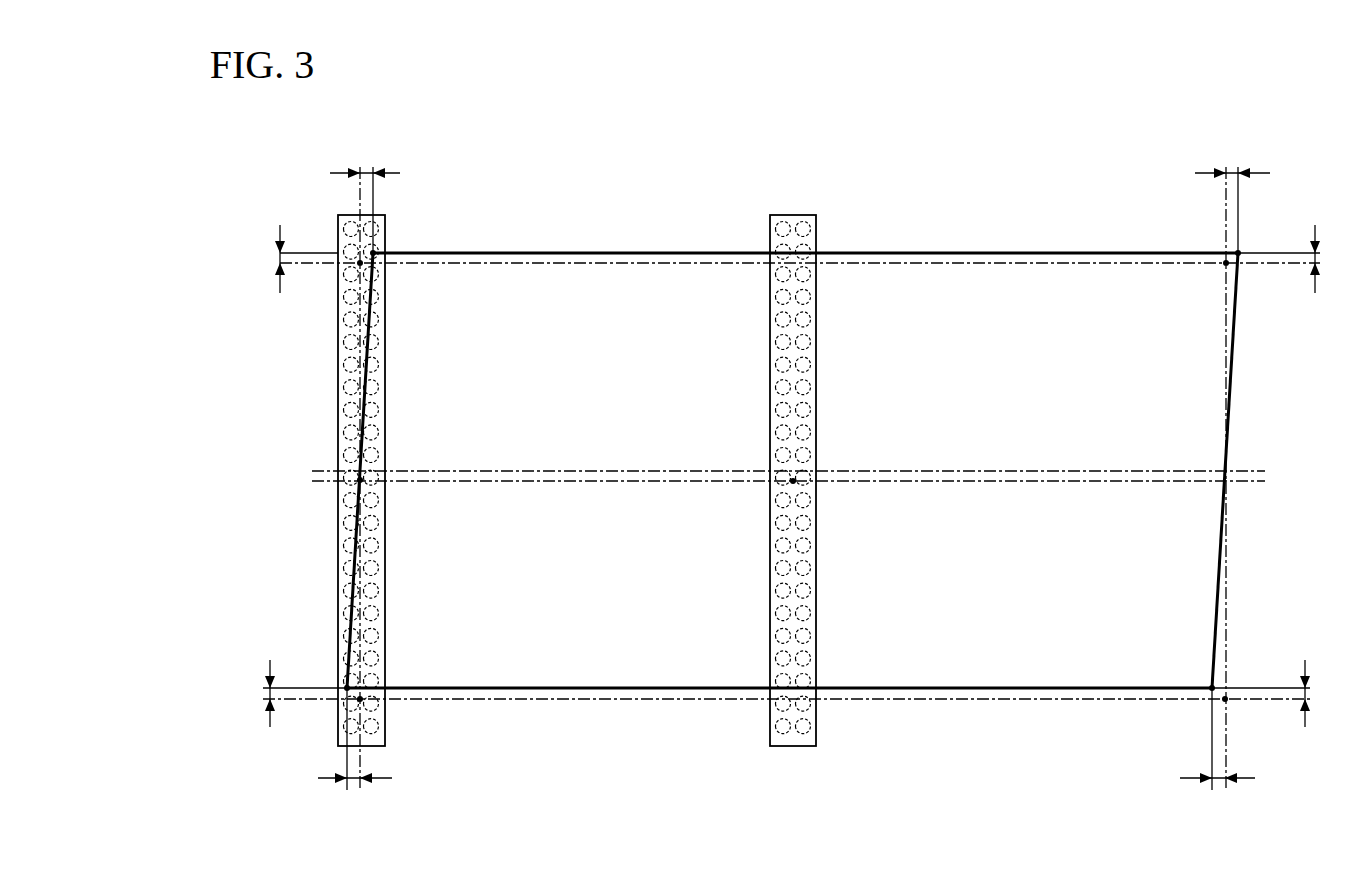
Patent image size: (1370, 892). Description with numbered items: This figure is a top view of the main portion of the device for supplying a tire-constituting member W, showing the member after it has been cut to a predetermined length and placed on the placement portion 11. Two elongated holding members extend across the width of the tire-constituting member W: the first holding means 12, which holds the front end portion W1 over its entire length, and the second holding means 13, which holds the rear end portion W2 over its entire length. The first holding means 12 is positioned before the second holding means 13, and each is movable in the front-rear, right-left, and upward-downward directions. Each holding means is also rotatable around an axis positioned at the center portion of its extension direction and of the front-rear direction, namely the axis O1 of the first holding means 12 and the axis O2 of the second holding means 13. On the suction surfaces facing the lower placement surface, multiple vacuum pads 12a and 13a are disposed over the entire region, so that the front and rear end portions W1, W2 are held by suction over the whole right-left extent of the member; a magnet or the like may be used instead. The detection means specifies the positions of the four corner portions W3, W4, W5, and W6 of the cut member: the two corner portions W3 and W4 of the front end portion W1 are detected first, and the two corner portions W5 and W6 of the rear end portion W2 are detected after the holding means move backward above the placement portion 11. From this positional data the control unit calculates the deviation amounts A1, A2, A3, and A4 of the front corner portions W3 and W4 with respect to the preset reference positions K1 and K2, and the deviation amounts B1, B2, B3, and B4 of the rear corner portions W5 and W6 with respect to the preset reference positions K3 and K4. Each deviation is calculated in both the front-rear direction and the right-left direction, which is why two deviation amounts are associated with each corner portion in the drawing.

The placement portion 11 is at (1002, 190).
The first holding means 12 is at (347, 214).
The vacuum pad 12a is at (340, 228).
The second holding means 13 is at (790, 214).
The vacuum pad 13a is at (770, 228).
The tire-constituting member W is at (1100, 246).
The front end portion W1 is at (352, 413).
The rear end portion W2 is at (1243, 379).
The corner portion W3 is at (375, 251).
The corner portion W4 is at (346, 686).
The corner portion W5 is at (1240, 252).
The corner portion W6 is at (1211, 690).
The reference position K1 is at (358, 265).
The reference position K2 is at (362, 700).
The reference position K3 is at (1224, 262).
The reference position K4 is at (1227, 700).
The axis O1 is at (358, 482).
The axis O2 is at (793, 481).
The deviation amount A1 is at (365, 197).
The deviation amount A2 is at (781, 259).
The deviation amount A3 is at (355, 751).
The deviation amount A4 is at (772, 693).
The deviation amount B1 is at (1232, 197).
The deviation amount B2 is at (1295, 259).
The deviation amount B3 is at (1217, 751).
The deviation amount B4 is at (1278, 693).